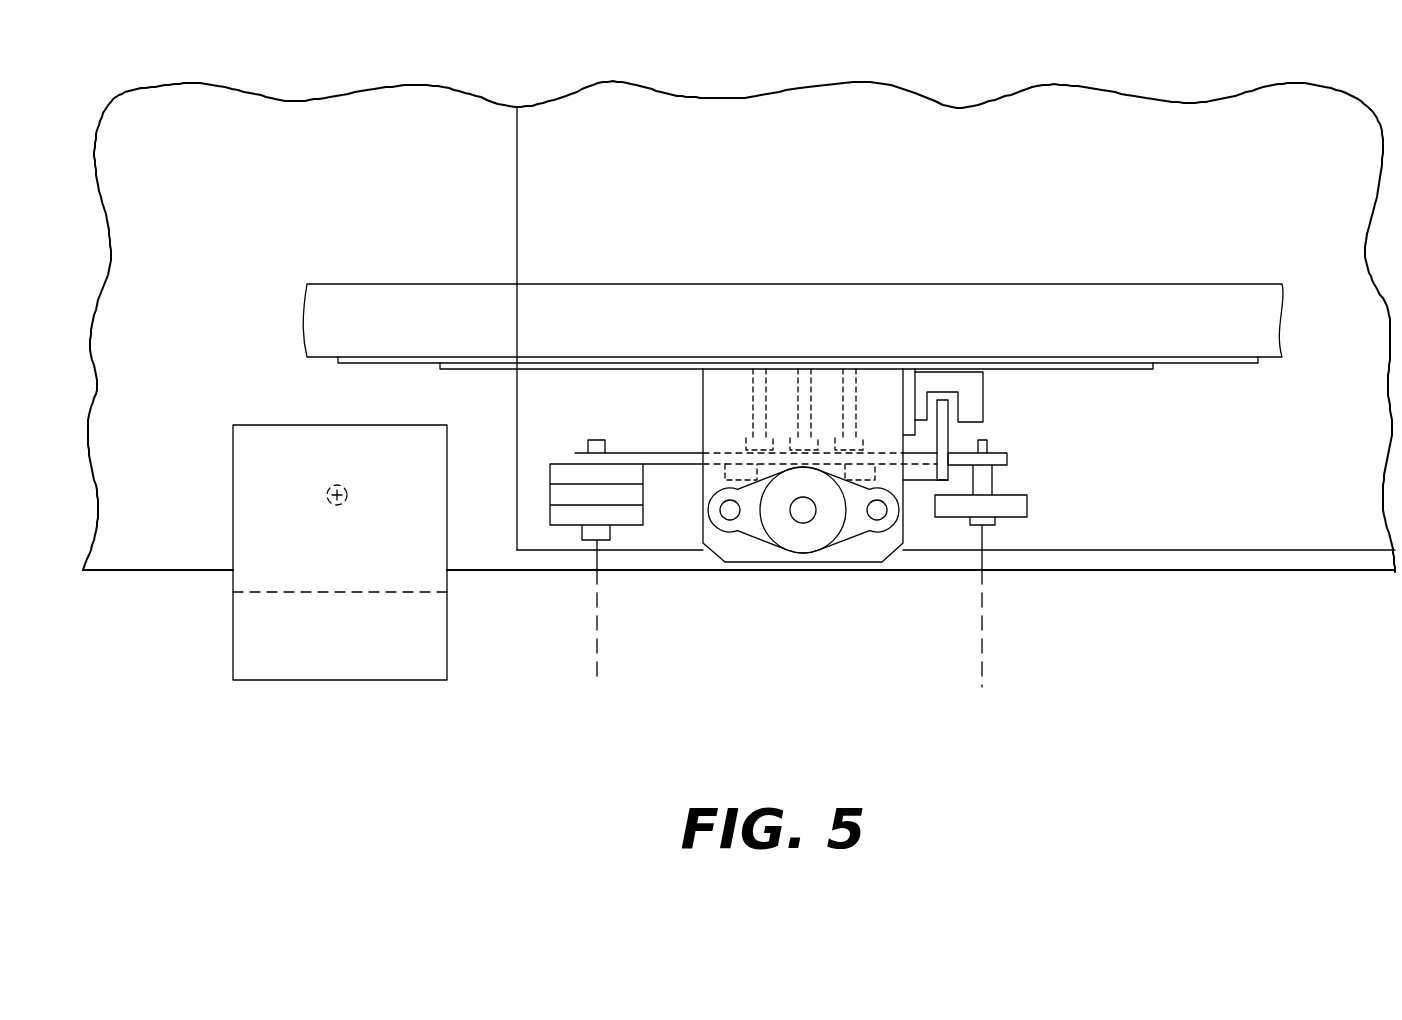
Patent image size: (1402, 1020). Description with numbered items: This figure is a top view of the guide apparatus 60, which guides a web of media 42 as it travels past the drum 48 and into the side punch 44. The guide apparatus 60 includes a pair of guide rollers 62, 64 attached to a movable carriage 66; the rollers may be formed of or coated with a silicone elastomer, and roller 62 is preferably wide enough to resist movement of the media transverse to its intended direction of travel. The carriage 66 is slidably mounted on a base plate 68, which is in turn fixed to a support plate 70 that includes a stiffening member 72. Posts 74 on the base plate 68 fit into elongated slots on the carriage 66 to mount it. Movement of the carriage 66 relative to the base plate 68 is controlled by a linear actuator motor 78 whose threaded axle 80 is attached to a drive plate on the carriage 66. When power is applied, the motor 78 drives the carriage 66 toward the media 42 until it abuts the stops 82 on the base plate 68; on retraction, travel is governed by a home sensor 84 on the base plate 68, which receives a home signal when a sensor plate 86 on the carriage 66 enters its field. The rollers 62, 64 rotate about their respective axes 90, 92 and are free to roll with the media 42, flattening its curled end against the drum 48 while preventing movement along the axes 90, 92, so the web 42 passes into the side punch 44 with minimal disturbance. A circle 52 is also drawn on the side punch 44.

The media 42 is at (596, 203).
The side punch 44 is at (328, 640).
The drum 48 is at (199, 201).
The pivot 52 is at (348, 497).
The guide apparatus 60 is at (793, 303).
The guide roller 62 is at (550, 497).
The guide roller 64 is at (1024, 505).
The movable carriage 66 is at (673, 457).
The base plate 68 is at (1100, 366).
The support plate 70 is at (370, 305).
The stiffening member 72 is at (382, 359).
The posts 74 is at (865, 385).
The linear actuator motor 78 is at (803, 542).
The threaded axle 80 is at (800, 514).
The stops 82 is at (940, 617).
The home sensor 84 is at (970, 392).
The sensor plate 86 is at (945, 432).
The axis 90 is at (597, 672).
The axis 92 is at (982, 675).